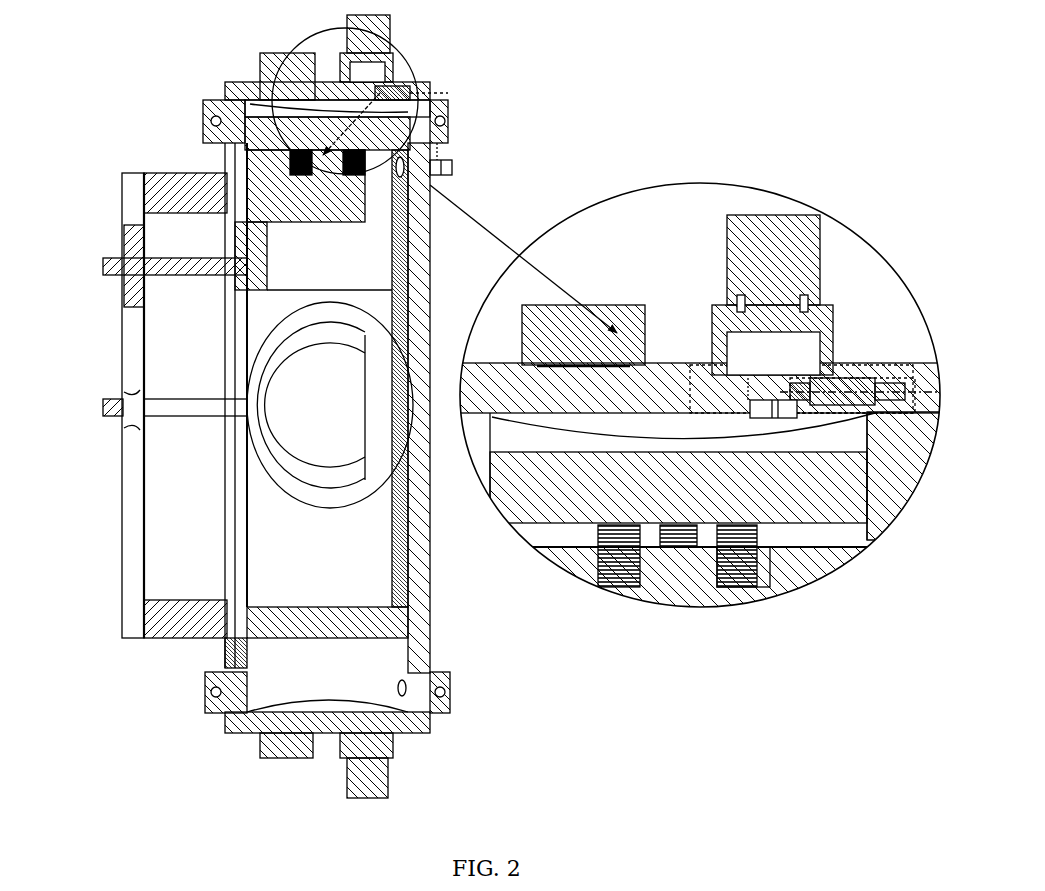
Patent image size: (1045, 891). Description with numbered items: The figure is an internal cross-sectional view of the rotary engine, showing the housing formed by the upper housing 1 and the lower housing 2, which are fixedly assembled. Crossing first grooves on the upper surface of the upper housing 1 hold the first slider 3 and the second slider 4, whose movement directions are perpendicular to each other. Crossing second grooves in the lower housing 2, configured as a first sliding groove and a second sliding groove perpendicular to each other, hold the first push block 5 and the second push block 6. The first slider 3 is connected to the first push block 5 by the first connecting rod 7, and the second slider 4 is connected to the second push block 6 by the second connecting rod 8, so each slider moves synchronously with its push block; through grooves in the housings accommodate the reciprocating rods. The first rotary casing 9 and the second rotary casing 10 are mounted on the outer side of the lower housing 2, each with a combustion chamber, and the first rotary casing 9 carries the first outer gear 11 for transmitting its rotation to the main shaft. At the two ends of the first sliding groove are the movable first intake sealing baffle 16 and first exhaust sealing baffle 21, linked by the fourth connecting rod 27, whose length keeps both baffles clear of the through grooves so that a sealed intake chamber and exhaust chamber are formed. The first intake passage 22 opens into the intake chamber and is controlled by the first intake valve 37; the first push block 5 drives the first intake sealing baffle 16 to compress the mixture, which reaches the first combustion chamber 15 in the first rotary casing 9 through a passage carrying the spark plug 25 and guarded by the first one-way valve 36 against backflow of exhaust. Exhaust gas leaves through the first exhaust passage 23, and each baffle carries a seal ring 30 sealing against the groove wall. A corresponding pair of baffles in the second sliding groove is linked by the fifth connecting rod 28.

The upper housing 1 is at (147, 630).
The lower housing 2 is at (427, 637).
The first slider 3 is at (125, 243).
The second slider 4 is at (127, 420).
The first push block 5 is at (267, 192).
The second push block 6 is at (270, 397).
The first connecting rod 7 is at (178, 257).
The second connecting rod 8 is at (180, 413).
The first rotary casing 9 is at (770, 305).
The second rotary casing 10 is at (256, 52).
The first outer gear 11 is at (745, 243).
The first combustion chamber 15 is at (787, 340).
The first intake sealing baffle 16 is at (253, 132).
The first exhaust sealing baffle 21 is at (280, 633).
The first intake passage 22 is at (408, 177).
The first exhaust passage 23 is at (397, 690).
The spark plug 25 is at (857, 398).
The fourth connecting rod 27 is at (403, 397).
The fifth connecting rod 28 is at (392, 413).
The seal ring 30 is at (865, 500).
The first one-way valve 36 is at (765, 425).
The first intake valve 37 is at (445, 155).